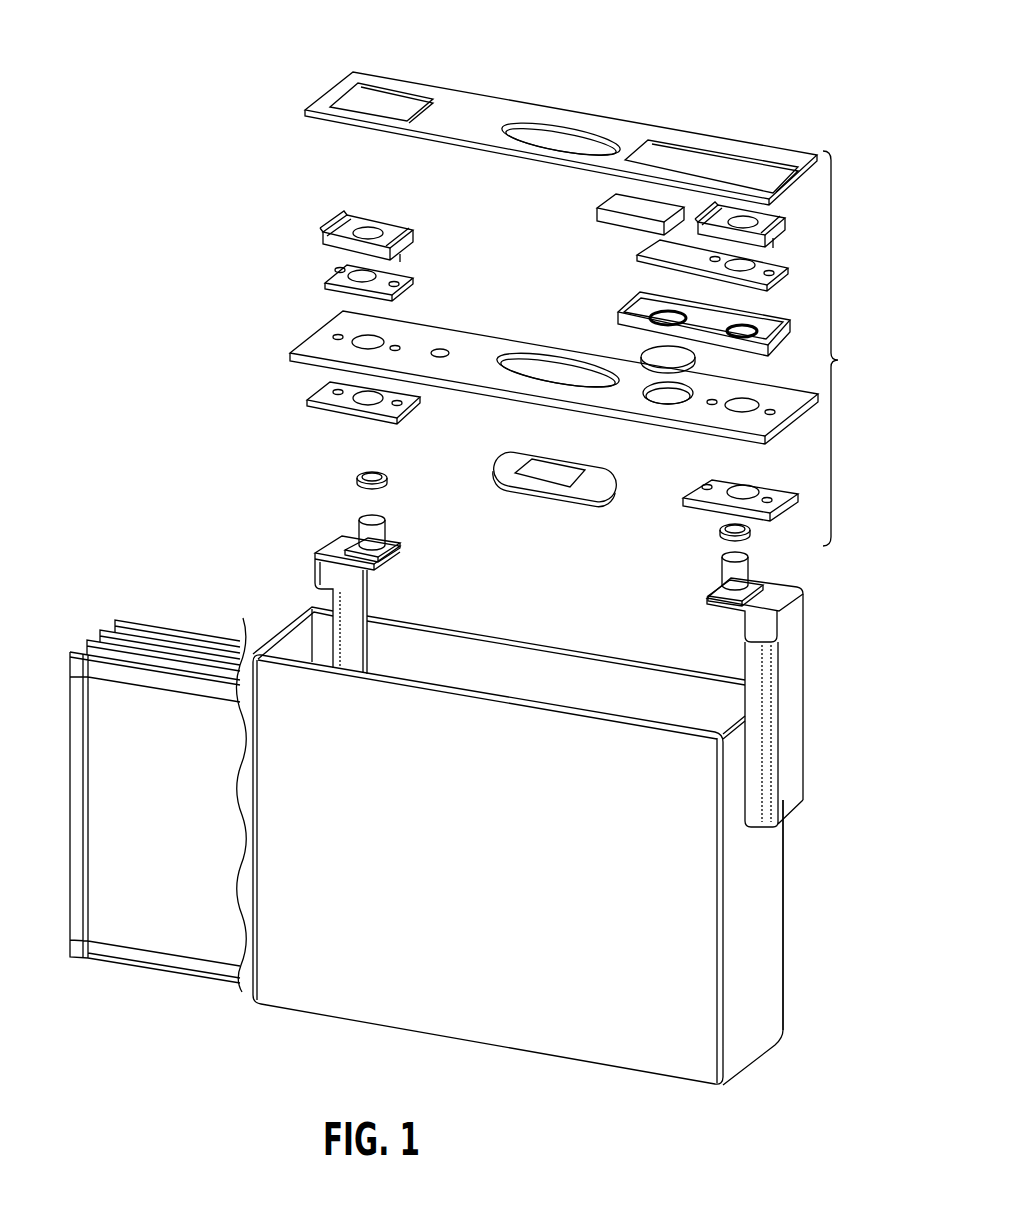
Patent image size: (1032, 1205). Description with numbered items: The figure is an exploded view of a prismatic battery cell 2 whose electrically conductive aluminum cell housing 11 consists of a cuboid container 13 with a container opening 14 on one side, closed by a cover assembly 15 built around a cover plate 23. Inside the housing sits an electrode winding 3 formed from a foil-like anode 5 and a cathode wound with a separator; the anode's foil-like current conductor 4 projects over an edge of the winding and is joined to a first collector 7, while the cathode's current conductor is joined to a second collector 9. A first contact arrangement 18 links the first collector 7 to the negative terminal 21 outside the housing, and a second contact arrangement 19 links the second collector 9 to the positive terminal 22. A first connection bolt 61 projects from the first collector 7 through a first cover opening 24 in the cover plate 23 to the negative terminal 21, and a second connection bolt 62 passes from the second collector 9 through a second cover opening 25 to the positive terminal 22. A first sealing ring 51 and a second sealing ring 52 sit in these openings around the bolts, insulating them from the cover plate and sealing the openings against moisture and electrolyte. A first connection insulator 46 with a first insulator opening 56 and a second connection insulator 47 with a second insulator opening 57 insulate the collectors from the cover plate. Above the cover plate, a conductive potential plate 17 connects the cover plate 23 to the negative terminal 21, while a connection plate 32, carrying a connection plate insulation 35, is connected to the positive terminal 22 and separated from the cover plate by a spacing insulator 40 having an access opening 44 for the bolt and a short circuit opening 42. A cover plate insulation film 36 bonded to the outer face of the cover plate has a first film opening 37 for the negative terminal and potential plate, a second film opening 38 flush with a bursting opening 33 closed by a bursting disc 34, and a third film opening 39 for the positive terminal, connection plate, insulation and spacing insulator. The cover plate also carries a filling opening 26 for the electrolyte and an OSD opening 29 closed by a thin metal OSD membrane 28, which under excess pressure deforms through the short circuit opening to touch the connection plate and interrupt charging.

The battery cell 2 is at (165, 440).
The electrode winding 3 is at (90, 605).
The current conductor 4 is at (78, 927).
The anode 5 is at (116, 607).
The first collector 7 is at (308, 532).
The second collector 9 is at (822, 580).
The cell housing 11 is at (802, 913).
The cuboid container 13 is at (770, 973).
The container opening 14 is at (545, 640).
The cover assembly 15 is at (850, 348).
The potential plate 17 is at (332, 280).
The first contact arrangement 18 is at (400, 208).
The second contact arrangement 19 is at (815, 200).
The negative terminal 21 is at (330, 243).
The positive terminal 22 is at (773, 234).
The cover plate 23 is at (482, 342).
The first cover opening 24 is at (367, 347).
The second cover opening 25 is at (742, 407).
The filling opening 26 is at (438, 352).
The OSD membrane 28 is at (657, 356).
The OSD opening 29 is at (668, 397).
The connection plate 32 is at (650, 245).
The bursting opening 33 is at (523, 369).
The bursting disc 34 is at (547, 478).
The connection plate insulation 35 is at (598, 212).
The cover plate insulation film 36 is at (473, 106).
The first film opening 37 is at (394, 104).
The second film opening 38 is at (570, 135).
The third film opening 39 is at (696, 160).
The spacing insulator 40 is at (628, 310).
The short circuit opening 42 is at (667, 316).
The access opening 44 is at (739, 330).
The first connection insulator 46 is at (312, 407).
The second connection insulator 47 is at (688, 492).
The first sealing ring 51 is at (385, 478).
The second sealing ring 52 is at (720, 529).
The first insulator opening 56 is at (368, 397).
The second insulator opening 57 is at (742, 491).
The first connection bolt 61 is at (378, 533).
The second connection bolt 62 is at (727, 568).